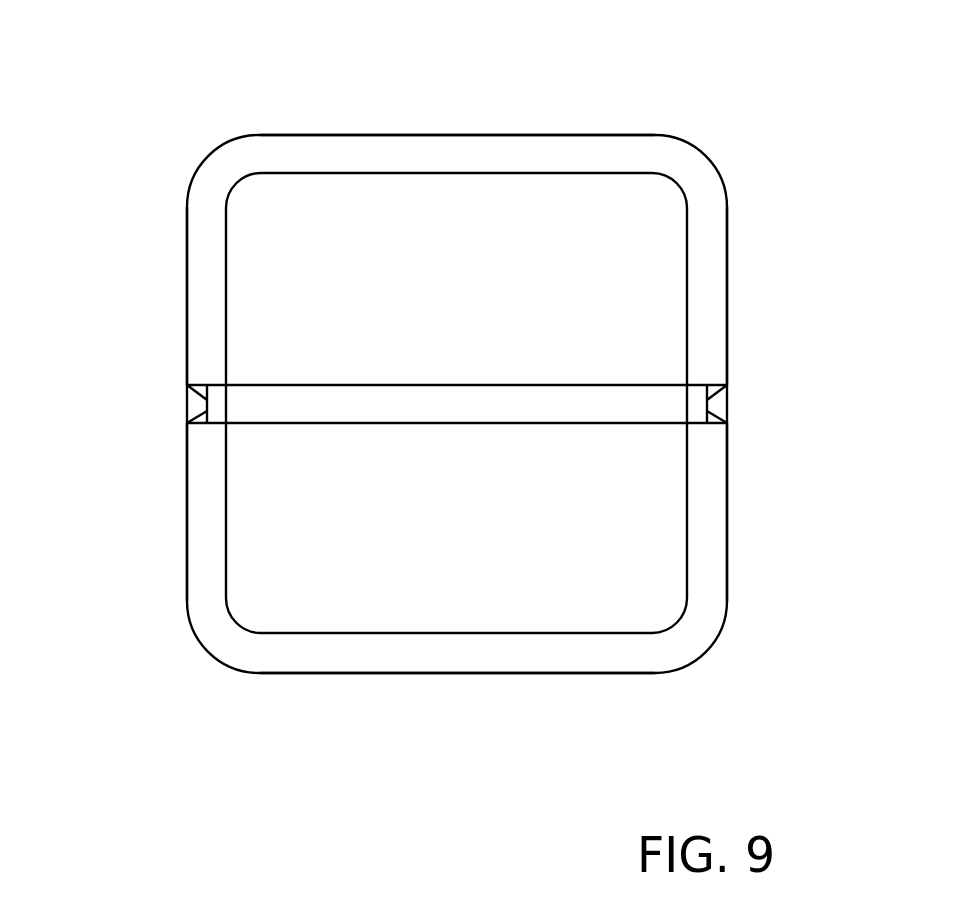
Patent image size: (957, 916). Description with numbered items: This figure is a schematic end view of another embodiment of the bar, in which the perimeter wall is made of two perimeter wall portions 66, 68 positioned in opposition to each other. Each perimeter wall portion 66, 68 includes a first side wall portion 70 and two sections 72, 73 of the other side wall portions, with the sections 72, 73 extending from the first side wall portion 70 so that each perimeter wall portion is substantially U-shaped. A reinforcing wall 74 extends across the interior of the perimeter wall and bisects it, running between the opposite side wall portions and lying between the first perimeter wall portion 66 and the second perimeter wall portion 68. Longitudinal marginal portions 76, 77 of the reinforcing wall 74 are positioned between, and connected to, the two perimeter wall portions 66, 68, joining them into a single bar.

The first perimeter wall portion 66 is at (457, 346).
The second perimeter wall portion 68 is at (457, 718).
The first side wall portion 70 is at (457, 88).
The section of side wall portion 72 is at (126, 404).
The section of side wall portion 73 is at (784, 404).
The reinforcing wall 74 is at (457, 403).
The longitudinal marginal portion 76 is at (147, 455).
The longitudinal marginal portion 77 is at (764, 467).